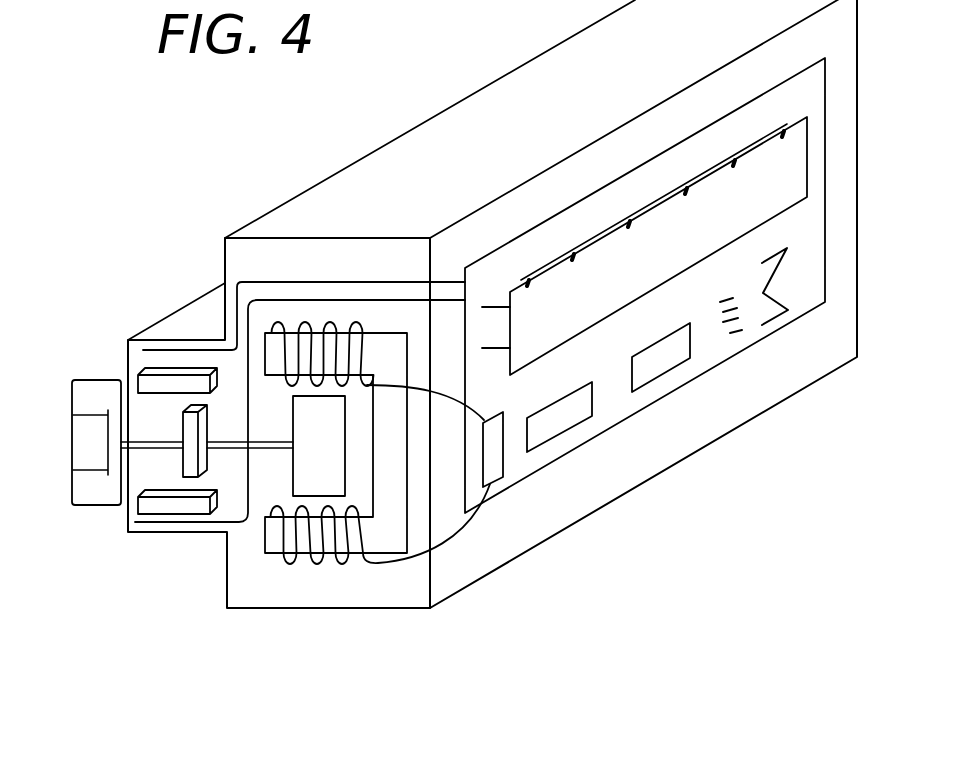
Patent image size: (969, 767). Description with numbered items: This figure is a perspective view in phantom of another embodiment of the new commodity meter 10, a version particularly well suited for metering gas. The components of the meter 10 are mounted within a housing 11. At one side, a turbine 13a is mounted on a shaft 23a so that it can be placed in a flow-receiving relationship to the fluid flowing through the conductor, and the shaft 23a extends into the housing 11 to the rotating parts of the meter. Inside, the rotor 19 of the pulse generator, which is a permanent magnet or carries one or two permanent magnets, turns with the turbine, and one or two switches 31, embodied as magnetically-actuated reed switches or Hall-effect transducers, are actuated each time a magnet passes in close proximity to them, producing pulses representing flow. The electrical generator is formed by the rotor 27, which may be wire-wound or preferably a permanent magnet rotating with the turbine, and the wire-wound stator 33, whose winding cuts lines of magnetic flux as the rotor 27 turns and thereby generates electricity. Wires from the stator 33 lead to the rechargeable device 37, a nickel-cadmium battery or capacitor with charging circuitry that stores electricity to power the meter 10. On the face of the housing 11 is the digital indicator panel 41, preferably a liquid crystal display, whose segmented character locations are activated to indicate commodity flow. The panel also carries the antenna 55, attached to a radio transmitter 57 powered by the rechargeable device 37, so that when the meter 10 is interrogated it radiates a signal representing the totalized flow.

The meter 10 is at (198, 220).
The housing 11 is at (365, 156).
The turbine 13a is at (84, 507).
The rotor 19 is at (192, 458).
The shaft 23a is at (292, 452).
The rotor 27 is at (315, 497).
The switch 31 is at (193, 505).
The stator 33 is at (310, 557).
The rechargeable device 37 is at (503, 478).
The digital indicator panel 41 is at (808, 174).
The antenna 55 is at (770, 320).
The radio transmitter 57 is at (662, 372).